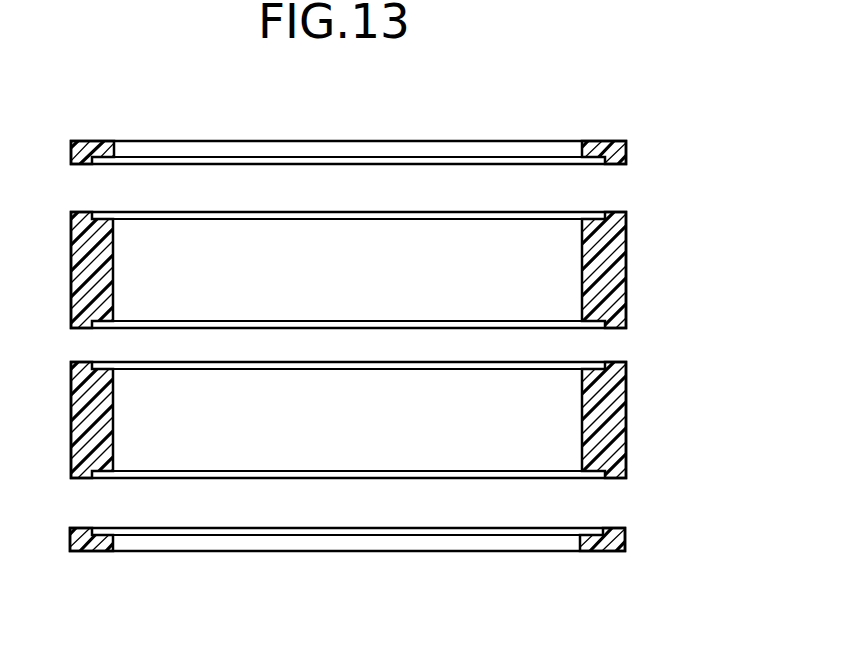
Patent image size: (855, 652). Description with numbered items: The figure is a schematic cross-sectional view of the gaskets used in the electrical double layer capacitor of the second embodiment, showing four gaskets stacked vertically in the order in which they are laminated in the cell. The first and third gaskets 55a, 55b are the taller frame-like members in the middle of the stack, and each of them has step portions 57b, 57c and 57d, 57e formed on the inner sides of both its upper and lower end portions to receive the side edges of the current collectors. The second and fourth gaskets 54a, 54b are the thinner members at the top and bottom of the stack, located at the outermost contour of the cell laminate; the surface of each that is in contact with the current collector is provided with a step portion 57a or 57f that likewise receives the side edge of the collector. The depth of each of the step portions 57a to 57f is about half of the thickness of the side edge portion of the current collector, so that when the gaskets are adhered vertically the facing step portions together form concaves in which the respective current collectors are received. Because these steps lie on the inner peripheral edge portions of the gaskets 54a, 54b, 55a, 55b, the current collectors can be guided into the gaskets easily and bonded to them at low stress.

The second gasket 54a is at (627, 148).
The fourth gasket 54b is at (624, 534).
The first gasket 55a is at (627, 254).
The third gasket 55b is at (627, 420).
The step portion 57a is at (590, 150).
The step portion 57b is at (597, 213).
The step portion 57c is at (587, 325).
The step portion 57d is at (592, 364).
The step portion 57e is at (587, 476).
The step portion 57f is at (590, 530).